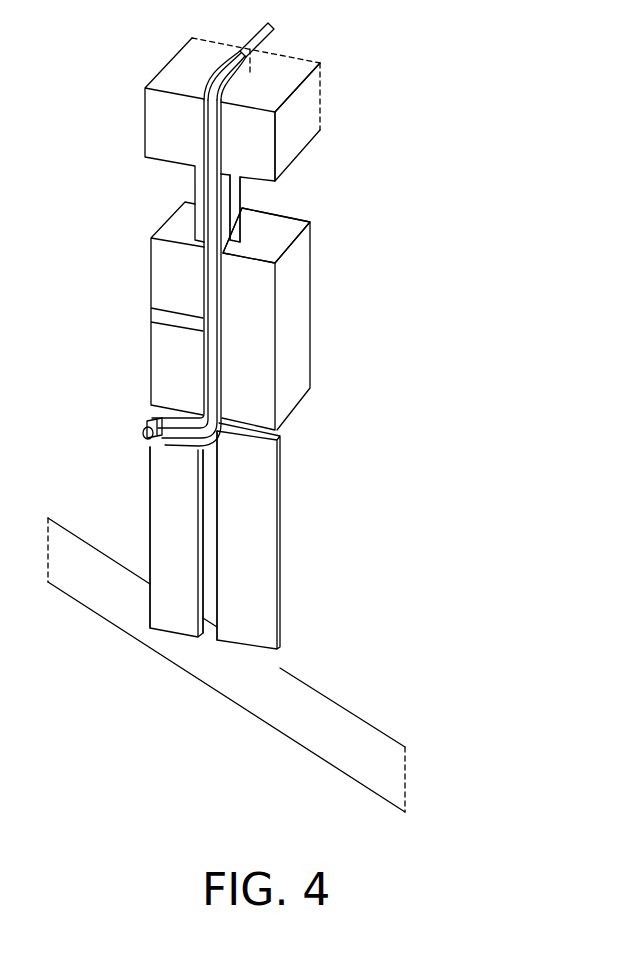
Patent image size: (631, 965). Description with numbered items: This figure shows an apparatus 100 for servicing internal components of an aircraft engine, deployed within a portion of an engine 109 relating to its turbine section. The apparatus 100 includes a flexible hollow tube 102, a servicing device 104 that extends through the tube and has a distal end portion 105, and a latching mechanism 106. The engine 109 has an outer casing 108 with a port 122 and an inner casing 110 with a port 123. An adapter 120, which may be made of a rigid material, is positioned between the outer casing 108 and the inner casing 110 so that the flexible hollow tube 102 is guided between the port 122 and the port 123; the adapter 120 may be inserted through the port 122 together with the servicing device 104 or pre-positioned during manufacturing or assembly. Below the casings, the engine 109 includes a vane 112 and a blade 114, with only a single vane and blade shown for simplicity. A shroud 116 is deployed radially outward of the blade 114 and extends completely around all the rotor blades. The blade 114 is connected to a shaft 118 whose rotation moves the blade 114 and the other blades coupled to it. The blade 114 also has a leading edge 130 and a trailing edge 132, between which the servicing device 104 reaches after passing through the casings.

The apparatus 100 is at (262, 82).
The flexible hollow tube 102 is at (213, 82).
The servicing device 104 is at (260, 42).
The distal end portion 105 is at (147, 438).
The latching mechanism 106 is at (146, 431).
The outer casing 108 is at (255, 155).
The engine 109 is at (396, 388).
The inner casing 110 is at (262, 318).
The vane 112 is at (267, 473).
The blade 114 is at (165, 585).
The shroud 116 is at (168, 369).
The shaft 118 is at (237, 685).
The adapter 120 is at (242, 192).
The port 122 is at (283, 117).
The port 123 is at (240, 262).
The leading edge 130 is at (150, 517).
The trailing edge 132 is at (205, 545).